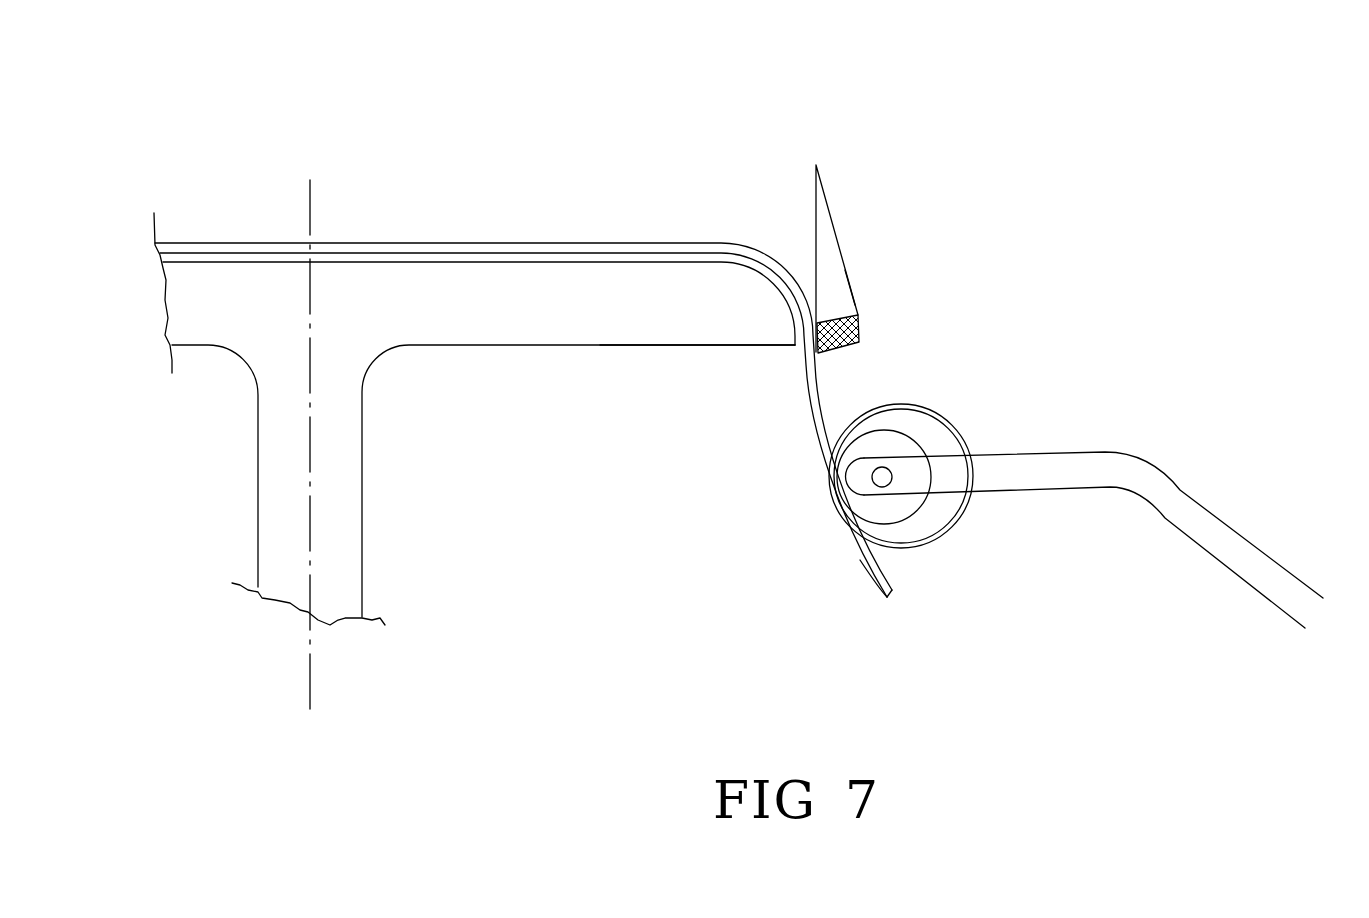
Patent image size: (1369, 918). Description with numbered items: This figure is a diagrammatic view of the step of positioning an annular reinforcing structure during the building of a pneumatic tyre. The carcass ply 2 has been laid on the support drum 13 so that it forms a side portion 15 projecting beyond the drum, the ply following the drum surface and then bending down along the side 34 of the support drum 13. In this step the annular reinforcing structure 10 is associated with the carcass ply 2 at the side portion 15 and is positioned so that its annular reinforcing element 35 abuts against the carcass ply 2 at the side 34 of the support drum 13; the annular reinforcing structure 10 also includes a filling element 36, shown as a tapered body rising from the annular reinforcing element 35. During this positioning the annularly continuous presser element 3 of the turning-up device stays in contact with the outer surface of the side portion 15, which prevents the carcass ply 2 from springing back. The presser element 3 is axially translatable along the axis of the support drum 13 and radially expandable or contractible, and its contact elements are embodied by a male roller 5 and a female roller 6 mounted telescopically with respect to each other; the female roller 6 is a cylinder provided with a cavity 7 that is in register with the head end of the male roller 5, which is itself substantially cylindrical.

The carcass ply 2 is at (533, 232).
The filling element 36 is at (825, 242).
The annular reinforcing structure 10 is at (850, 300).
The annular reinforcing element 35 is at (860, 328).
The cavity 7 is at (925, 432).
The annularly continuous presser element 3 is at (968, 418).
The support drum 13 is at (1238, 545).
The side of the support drum 34 is at (790, 310).
The side portion 15 is at (867, 577).
The male roller 5 is at (892, 507).
The female roller 6 is at (958, 518).